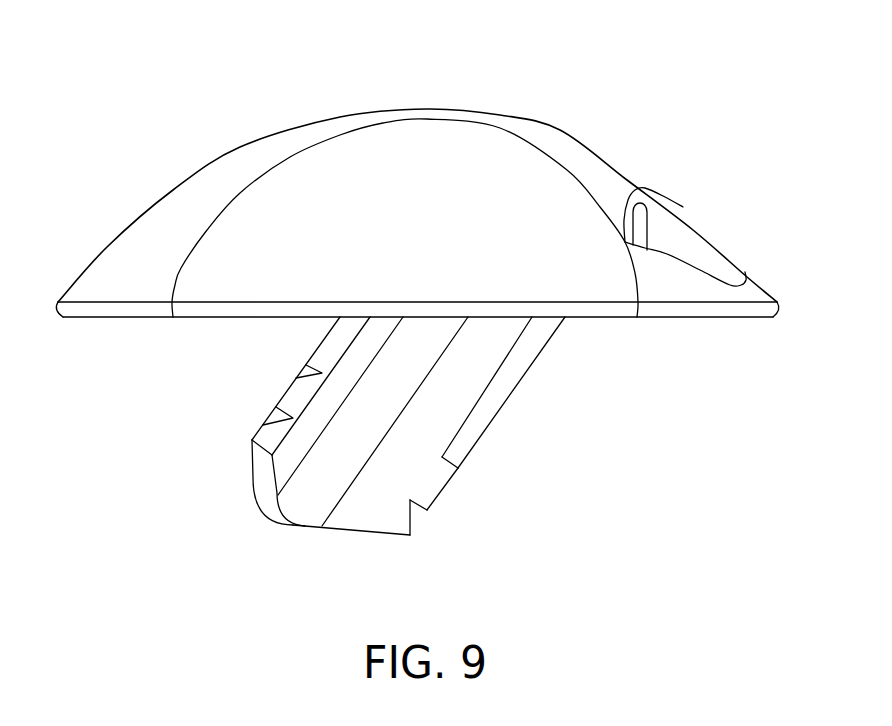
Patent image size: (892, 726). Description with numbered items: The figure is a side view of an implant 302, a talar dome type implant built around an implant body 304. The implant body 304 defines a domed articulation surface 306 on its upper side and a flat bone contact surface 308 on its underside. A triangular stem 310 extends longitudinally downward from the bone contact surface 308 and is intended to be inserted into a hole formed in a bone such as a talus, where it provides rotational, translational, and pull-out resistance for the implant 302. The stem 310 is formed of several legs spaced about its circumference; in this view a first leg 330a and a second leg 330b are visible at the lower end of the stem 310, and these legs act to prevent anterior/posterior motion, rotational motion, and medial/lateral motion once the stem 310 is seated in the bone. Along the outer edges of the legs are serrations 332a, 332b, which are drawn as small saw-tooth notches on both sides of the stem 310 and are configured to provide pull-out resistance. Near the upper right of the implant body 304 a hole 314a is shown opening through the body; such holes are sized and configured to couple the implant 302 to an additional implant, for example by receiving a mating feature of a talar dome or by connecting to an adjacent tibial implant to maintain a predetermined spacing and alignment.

The implant 302 is at (682, 84).
The implant body 304 is at (758, 275).
The articulation surface 306 is at (451, 108).
The bone contact surface 308 is at (197, 318).
The stem 310 is at (517, 387).
The hole 314a is at (639, 223).
The first leg 330a is at (257, 453).
The second leg 330b is at (385, 537).
The serration 332a is at (278, 420).
The serration 332b is at (303, 378).